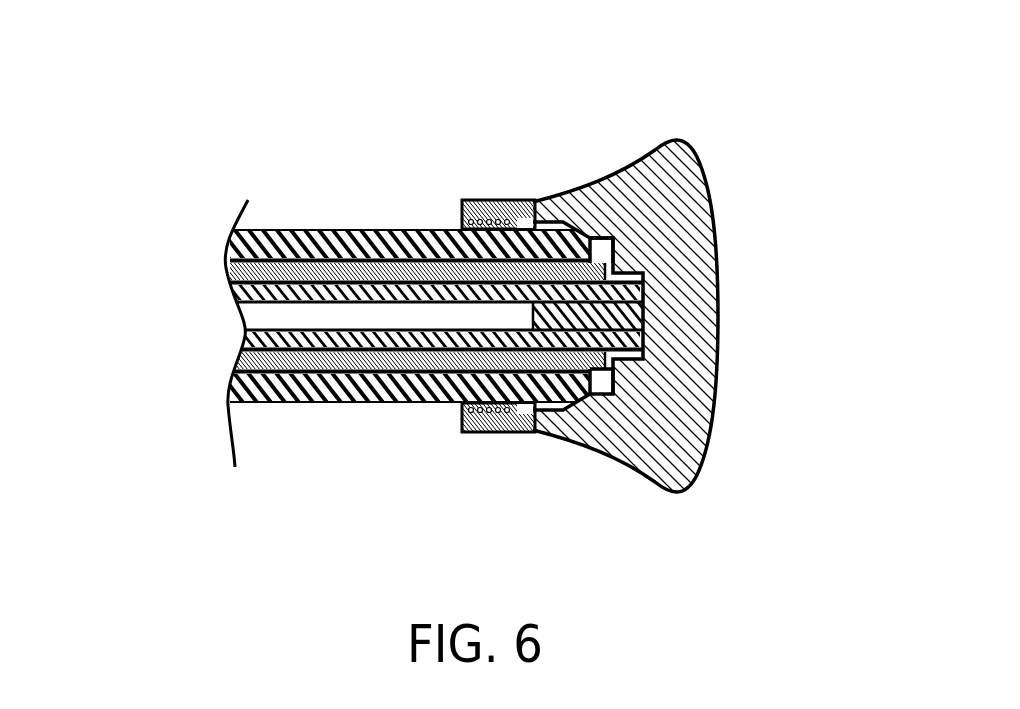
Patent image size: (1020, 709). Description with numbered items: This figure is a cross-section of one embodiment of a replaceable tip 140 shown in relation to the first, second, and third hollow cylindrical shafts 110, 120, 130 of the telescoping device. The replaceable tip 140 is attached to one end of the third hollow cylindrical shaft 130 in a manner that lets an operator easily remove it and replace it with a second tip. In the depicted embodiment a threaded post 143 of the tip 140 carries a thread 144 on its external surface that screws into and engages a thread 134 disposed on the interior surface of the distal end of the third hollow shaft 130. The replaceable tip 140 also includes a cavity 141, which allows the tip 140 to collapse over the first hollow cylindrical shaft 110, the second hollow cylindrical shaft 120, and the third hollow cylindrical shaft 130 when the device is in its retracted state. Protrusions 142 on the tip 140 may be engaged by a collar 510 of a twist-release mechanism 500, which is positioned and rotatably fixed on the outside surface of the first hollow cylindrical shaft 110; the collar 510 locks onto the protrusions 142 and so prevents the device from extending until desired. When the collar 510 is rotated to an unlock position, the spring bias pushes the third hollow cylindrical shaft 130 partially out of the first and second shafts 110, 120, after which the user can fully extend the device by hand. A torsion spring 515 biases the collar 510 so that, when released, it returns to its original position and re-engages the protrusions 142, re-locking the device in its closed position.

The first hollow cylindrical shaft 110 is at (233, 385).
The second hollow cylindrical shaft 120 is at (243, 362).
The third hollow cylindrical shaft 130 is at (250, 340).
The thread 134 is at (577, 300).
The replaceable tip 140 is at (703, 277).
The cavity 141 is at (600, 378).
The protrusions 142 is at (533, 200).
The threaded post 143 is at (703, 152).
The thread 144 is at (647, 358).
The twist-release mechanism 500 is at (523, 150).
The collar 510 is at (487, 200).
The torsion spring 515 is at (480, 433).